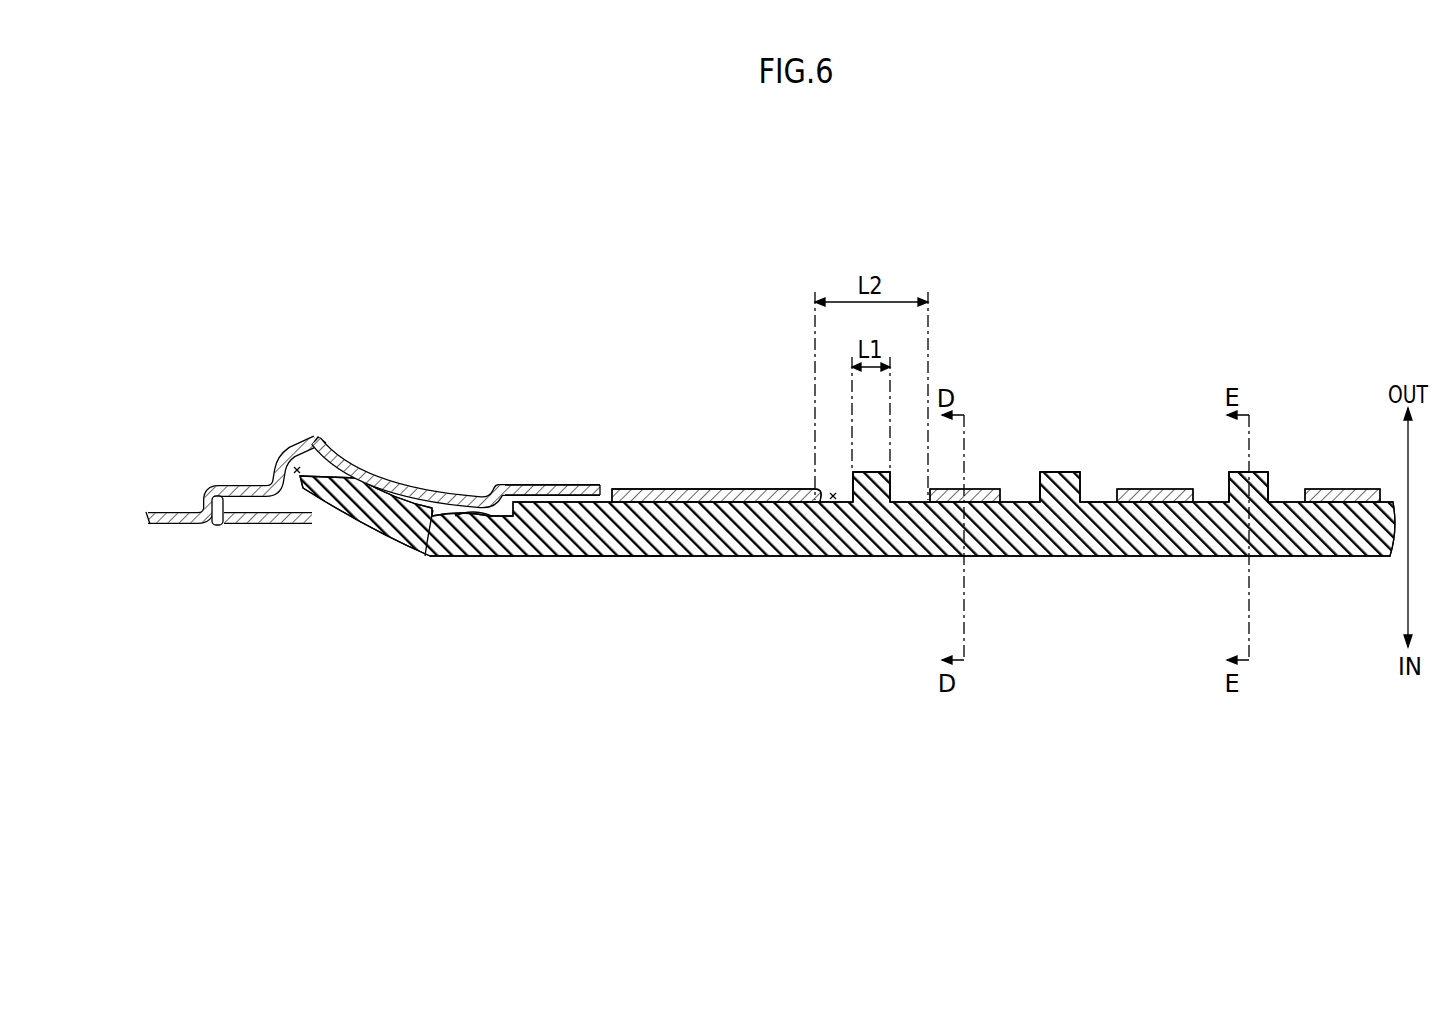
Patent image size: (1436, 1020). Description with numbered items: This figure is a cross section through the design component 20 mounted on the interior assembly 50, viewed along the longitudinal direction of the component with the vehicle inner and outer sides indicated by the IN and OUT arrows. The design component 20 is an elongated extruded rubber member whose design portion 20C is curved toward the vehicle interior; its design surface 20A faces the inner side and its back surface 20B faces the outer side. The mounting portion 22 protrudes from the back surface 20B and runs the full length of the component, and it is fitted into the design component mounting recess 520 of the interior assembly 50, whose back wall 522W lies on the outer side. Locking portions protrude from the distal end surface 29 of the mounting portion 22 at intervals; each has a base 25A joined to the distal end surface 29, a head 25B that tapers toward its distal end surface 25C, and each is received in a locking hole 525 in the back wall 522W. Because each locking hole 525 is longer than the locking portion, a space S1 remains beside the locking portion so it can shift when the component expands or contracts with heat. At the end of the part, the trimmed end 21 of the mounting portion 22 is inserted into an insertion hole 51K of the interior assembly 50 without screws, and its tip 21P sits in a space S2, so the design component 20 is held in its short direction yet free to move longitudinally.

The design component 20 is at (527, 540).
The design surface 20A is at (605, 560).
The back surface 20B is at (458, 520).
The design portion 20C is at (560, 540).
The ends of the mounting portion 21 is at (355, 490).
The tips of the ends 21P is at (328, 462).
The mounting portion 22 is at (497, 486).
The base 25A is at (878, 480).
The head 25B is at (858, 476).
The distal end surface 25C is at (880, 471).
The distal end surface of the mounting portion 29 is at (1097, 503).
The interior assembly 50 is at (232, 524).
The insertion holes 51K is at (323, 527).
The design component mounting recess 520 is at (652, 502).
The back wall 522W is at (1137, 508).
The locking holes 525 is at (818, 486).
The space S1 is at (833, 492).
The spaces S2 is at (297, 466).